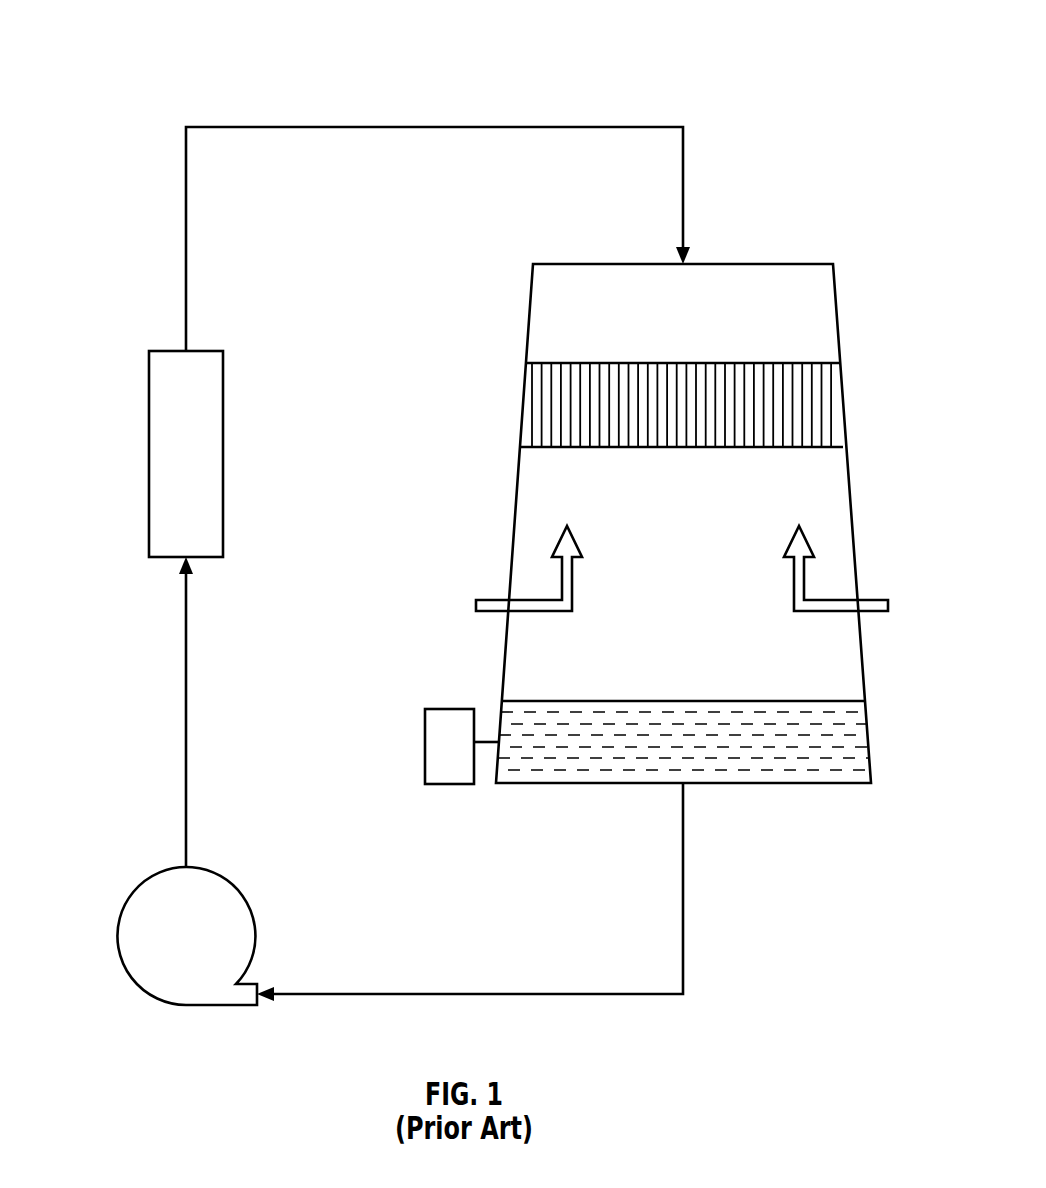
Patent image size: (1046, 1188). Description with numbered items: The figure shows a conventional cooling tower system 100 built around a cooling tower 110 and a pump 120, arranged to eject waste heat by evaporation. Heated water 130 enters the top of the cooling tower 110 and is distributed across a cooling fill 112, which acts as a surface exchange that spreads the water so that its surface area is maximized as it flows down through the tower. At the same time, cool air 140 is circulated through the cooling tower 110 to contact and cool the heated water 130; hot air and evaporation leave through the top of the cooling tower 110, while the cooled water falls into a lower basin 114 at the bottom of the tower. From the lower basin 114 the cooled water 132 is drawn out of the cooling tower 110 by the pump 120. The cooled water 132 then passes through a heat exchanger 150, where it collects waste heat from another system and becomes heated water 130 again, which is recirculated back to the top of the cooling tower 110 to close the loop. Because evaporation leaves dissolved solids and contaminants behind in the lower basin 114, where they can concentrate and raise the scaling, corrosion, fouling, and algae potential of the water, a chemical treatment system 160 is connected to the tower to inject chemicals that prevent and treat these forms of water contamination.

The cooling tower system 100 is at (150, 62).
The cooling tower 110 is at (784, 264).
The cooling fill 112 is at (820, 397).
The lower basin 114 is at (847, 745).
The pump 120 is at (140, 885).
The heated water 130 is at (466, 127).
The cooled water 132 is at (436, 994).
The cool air 140 is at (872, 600).
The heat exchanger 150 is at (169, 351).
The chemical treatment system 160 is at (450, 709).